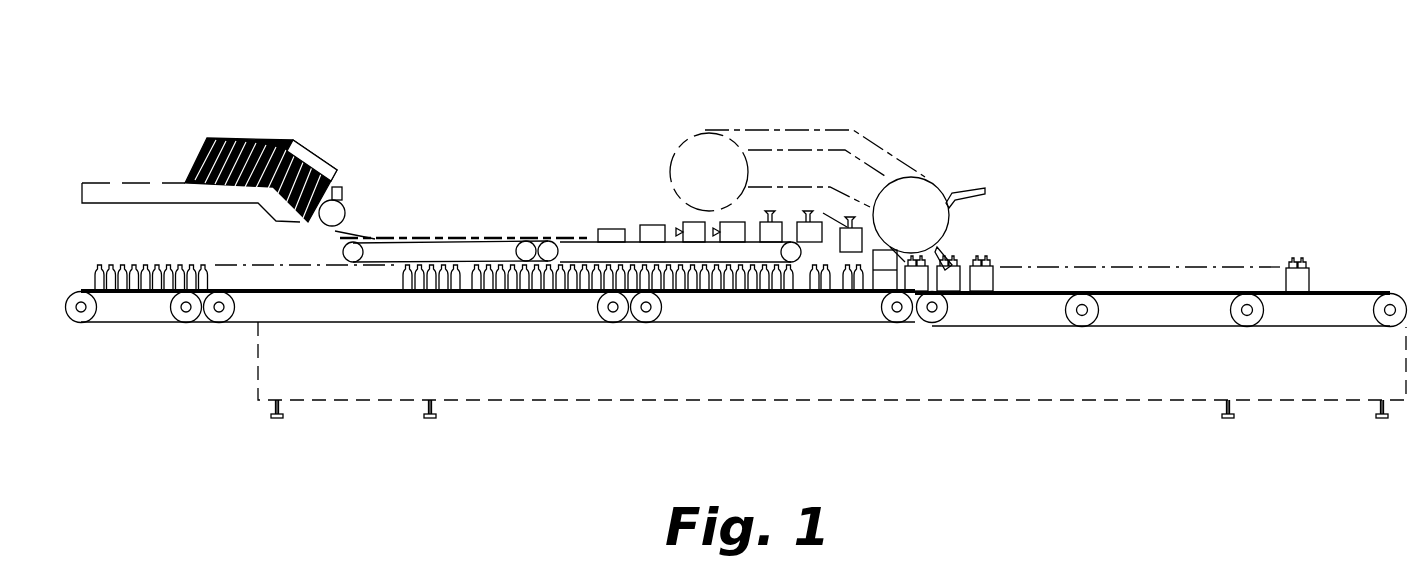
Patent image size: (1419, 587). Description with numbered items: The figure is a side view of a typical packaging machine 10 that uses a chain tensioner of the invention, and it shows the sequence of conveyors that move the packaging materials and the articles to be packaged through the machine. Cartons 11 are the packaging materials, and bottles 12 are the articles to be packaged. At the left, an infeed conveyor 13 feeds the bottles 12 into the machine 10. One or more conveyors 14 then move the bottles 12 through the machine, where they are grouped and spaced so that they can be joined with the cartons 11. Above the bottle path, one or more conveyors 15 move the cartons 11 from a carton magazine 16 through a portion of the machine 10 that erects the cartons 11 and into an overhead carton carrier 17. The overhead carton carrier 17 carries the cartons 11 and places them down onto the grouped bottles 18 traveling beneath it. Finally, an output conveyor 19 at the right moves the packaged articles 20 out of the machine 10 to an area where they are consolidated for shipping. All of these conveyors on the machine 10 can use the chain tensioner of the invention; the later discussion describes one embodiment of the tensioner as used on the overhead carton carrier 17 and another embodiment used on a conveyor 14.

The packaging machine 10 is at (1030, 168).
The cartons 11 is at (640, 229).
The bottles 12 is at (156, 262).
The infeed conveyor 13 is at (152, 323).
The conveyors 14 is at (395, 323).
The conveyors 15 is at (345, 256).
The carton magazine 16 is at (152, 183).
The overhead carton carrier 17 is at (762, 129).
The grouped bottles 18 is at (810, 297).
The output conveyor 19 is at (1335, 328).
The packaged articles 20 is at (1310, 270).